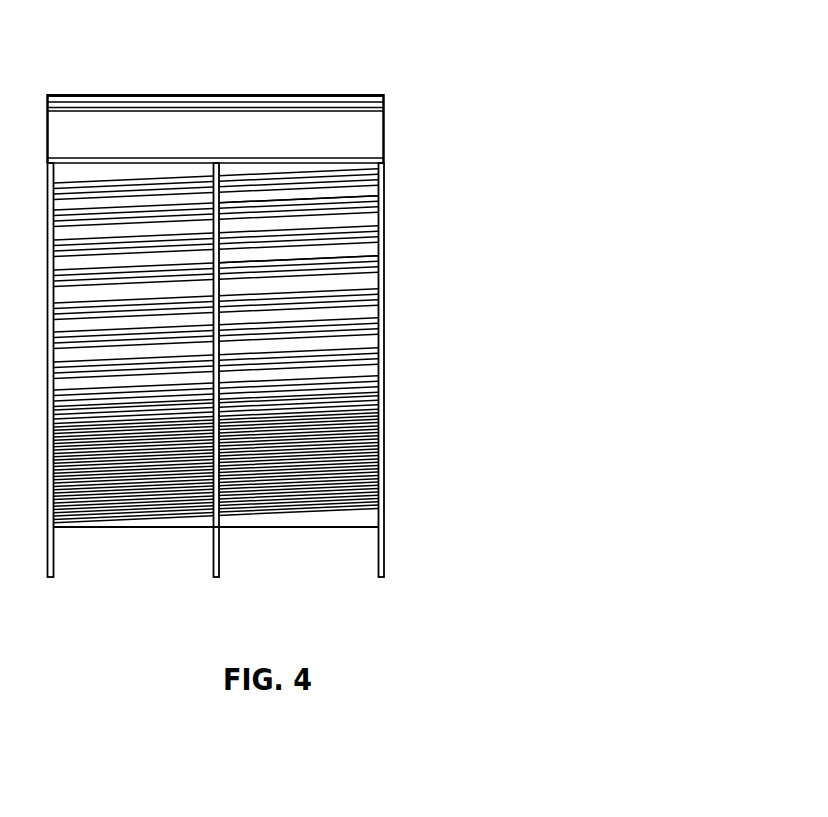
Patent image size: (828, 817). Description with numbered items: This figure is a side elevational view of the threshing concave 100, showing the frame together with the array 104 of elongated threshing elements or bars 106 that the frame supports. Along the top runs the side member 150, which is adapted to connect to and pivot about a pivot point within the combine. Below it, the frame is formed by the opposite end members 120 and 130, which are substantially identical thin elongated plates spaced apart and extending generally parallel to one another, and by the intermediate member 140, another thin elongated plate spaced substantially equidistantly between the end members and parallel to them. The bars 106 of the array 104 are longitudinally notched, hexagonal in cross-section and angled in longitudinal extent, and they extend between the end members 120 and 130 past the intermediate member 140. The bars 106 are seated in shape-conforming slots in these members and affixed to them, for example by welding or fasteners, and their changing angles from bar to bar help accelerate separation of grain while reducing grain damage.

The threshing concave 100 is at (366, 42).
The side member 150 is at (267, 95).
The elongated threshing elements or bars 106 is at (360, 262).
The array of elongated threshing elements 104 is at (340, 387).
The end member 120 is at (55, 553).
The intermediate member 140 is at (220, 553).
The end member 130 is at (385, 553).